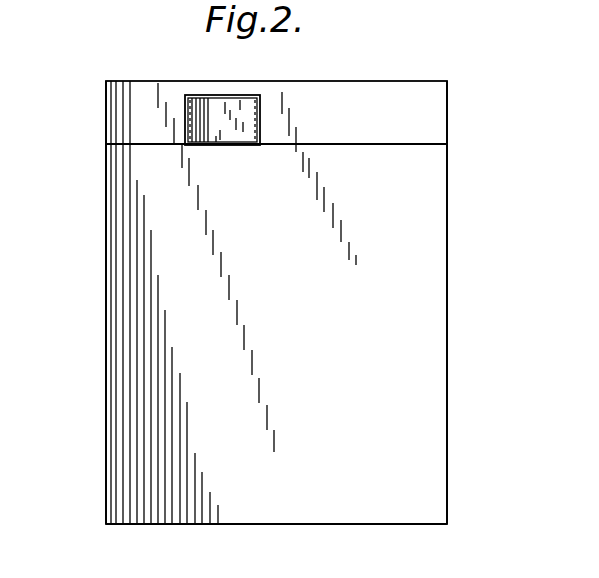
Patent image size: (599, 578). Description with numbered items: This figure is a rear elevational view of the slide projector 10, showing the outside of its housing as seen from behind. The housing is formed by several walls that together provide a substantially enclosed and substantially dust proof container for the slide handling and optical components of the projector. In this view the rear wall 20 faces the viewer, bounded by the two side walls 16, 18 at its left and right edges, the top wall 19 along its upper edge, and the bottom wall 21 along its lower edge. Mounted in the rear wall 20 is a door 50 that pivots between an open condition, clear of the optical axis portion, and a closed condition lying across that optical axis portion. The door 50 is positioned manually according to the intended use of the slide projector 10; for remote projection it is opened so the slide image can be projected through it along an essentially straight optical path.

The slide projector 10 is at (479, 194).
The side wall 16 is at (447, 272).
The side wall 18 is at (106, 248).
The top wall 19 is at (348, 79).
The rear wall 20 is at (135, 300).
The bottom wall 21 is at (436, 524).
The door 50 is at (205, 113).